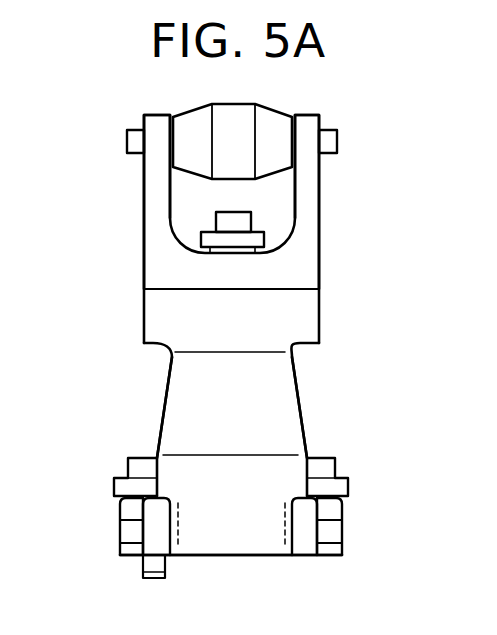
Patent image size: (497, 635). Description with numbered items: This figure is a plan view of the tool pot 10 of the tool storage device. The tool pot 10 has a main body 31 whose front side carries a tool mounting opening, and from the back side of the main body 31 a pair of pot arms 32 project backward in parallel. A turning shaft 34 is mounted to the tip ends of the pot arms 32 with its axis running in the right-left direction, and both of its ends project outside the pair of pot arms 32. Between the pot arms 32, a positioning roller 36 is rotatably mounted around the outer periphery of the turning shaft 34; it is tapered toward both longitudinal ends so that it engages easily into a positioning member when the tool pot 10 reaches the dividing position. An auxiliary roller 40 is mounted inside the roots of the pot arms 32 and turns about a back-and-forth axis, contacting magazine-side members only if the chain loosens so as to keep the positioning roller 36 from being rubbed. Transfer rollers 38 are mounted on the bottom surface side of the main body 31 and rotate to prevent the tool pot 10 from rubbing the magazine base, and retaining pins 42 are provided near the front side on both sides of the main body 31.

The tool pot 10 is at (328, 310).
The main body 31 is at (278, 403).
The pot arms 32 is at (153, 213).
The turning shaft 34 is at (328, 145).
The positioning roller 36 is at (188, 146).
The transfer rollers 38 is at (122, 490).
The auxiliary roller 40 is at (202, 240).
The retaining pins 42 is at (128, 538).